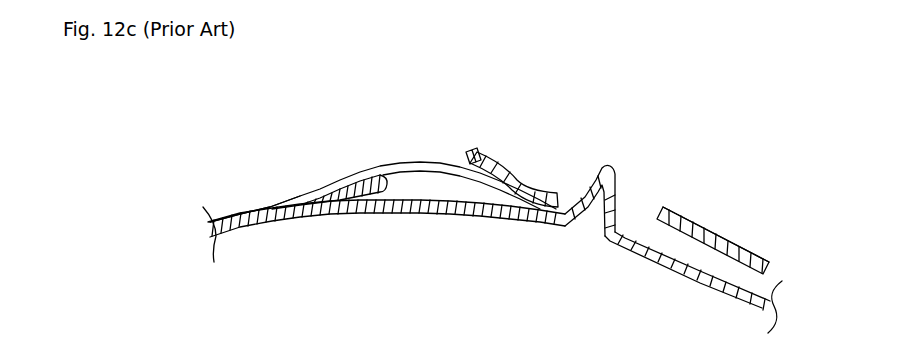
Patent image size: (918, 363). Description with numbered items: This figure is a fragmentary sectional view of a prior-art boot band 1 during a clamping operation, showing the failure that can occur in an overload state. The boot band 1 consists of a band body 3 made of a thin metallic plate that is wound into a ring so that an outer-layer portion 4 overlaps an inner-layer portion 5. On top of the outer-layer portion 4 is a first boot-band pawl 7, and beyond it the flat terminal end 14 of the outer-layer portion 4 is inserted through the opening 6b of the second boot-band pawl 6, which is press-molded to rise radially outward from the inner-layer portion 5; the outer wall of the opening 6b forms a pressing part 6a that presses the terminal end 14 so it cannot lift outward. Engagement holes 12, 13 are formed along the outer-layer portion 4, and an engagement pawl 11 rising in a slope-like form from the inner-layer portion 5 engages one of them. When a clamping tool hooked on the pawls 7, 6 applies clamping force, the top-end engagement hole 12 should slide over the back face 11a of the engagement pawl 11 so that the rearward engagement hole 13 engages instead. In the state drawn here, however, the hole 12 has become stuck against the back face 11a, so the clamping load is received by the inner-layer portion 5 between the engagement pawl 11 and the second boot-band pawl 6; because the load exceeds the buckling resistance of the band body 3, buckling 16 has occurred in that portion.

The boot band 1 is at (538, 119).
The band body 3 is at (666, 161).
The outer-layer portion 4 is at (255, 201).
The inner-layer portion 5 is at (703, 292).
The second boot-band pawl 6 is at (740, 243).
The pressing part 6a is at (688, 222).
The opening 6b is at (677, 240).
The first boot-band pawl 7 is at (488, 150).
The engagement pawl 11 is at (367, 166).
The back face 11a is at (337, 200).
The top-end engagement hole 12 is at (316, 186).
The engagement hole 13 is at (220, 228).
The terminal end 14 is at (534, 185).
The buckling 16 is at (607, 165).